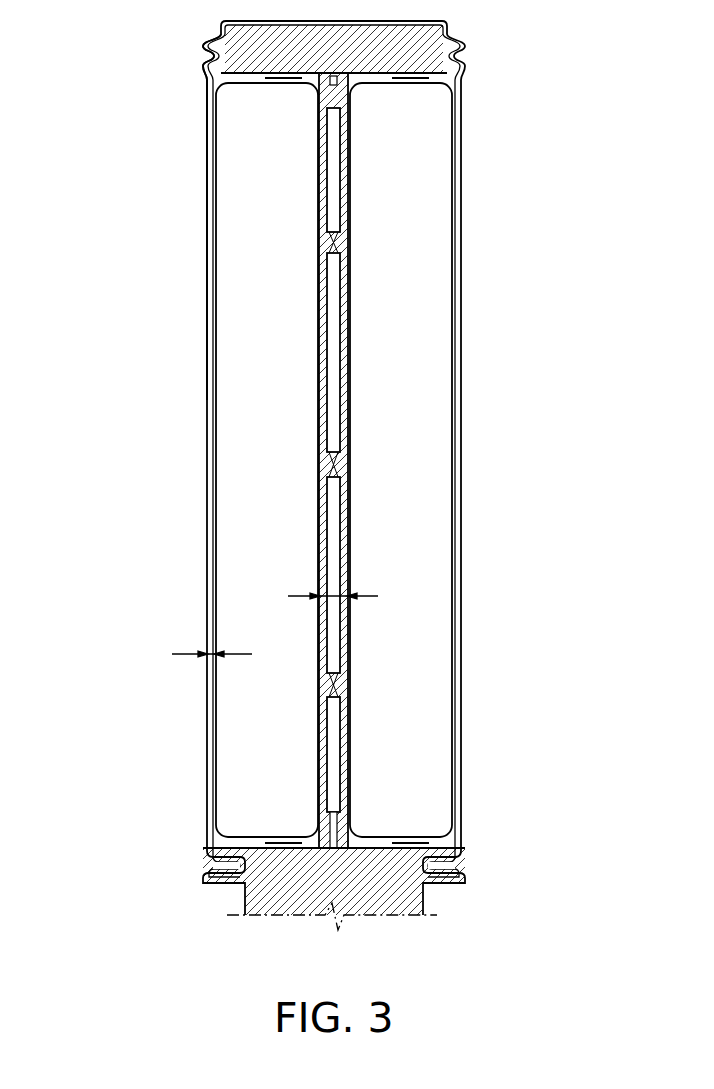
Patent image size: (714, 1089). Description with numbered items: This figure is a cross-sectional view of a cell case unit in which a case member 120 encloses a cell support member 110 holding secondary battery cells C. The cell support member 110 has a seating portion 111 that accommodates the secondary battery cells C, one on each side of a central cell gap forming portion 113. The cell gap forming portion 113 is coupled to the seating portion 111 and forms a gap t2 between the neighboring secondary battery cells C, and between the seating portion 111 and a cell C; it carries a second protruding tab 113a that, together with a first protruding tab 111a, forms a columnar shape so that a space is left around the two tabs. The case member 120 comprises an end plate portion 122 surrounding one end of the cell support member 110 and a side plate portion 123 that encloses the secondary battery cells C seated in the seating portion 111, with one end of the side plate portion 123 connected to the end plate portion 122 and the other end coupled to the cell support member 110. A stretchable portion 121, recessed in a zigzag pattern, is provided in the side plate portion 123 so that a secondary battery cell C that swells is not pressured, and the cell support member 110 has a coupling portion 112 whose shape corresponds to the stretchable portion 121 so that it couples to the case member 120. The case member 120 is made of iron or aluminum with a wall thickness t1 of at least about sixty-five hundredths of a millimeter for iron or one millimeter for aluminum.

The cell support member 110 is at (438, 440).
The seating portion 111 is at (323, 173).
The first protruding tab 111a is at (333, 243).
The coupling portion 112 is at (412, 86).
The cell gap forming portion 113 is at (346, 365).
The second protruding tab 113a is at (340, 463).
The case member 120 is at (237, 200).
The stretchable portion 121 is at (203, 53).
The end plate portion 122 is at (278, 22).
The side plate portion 123 is at (208, 130).
The secondary battery cell C is at (410, 536).
The thickness t1 is at (210, 665).
The gap t2 is at (333, 597).